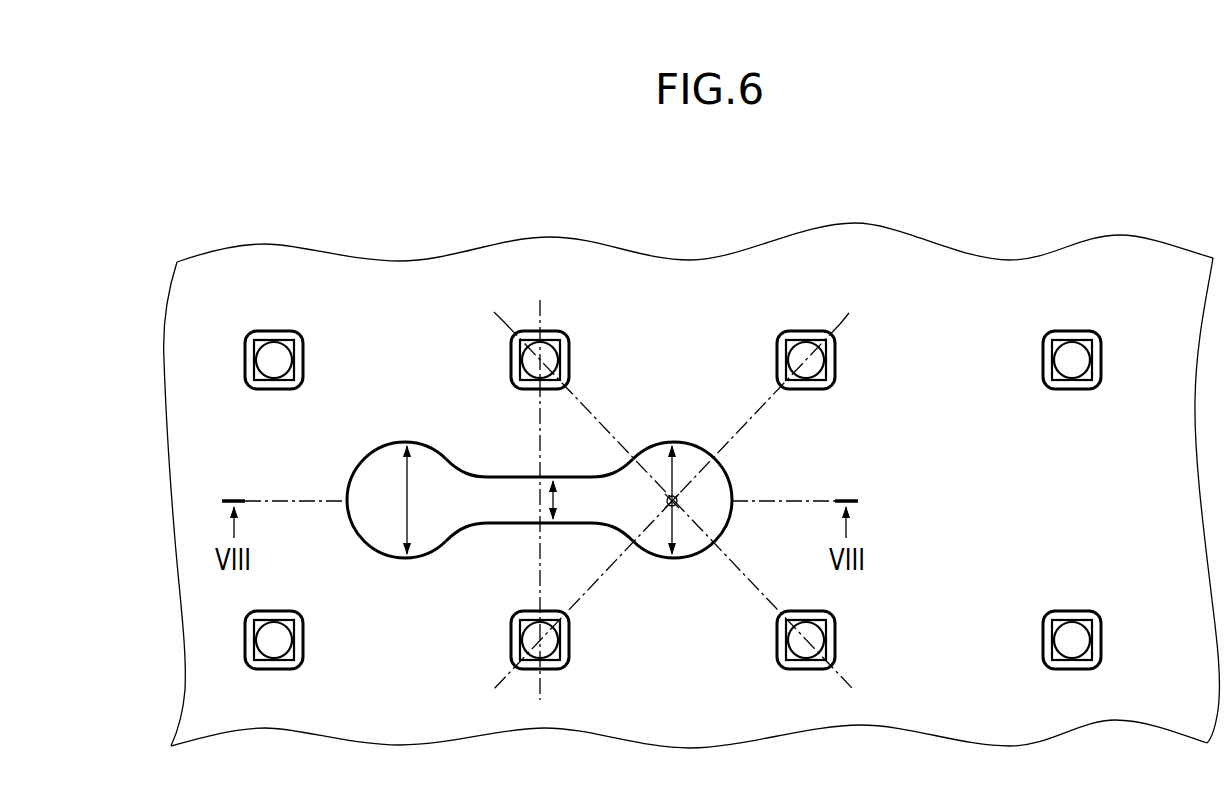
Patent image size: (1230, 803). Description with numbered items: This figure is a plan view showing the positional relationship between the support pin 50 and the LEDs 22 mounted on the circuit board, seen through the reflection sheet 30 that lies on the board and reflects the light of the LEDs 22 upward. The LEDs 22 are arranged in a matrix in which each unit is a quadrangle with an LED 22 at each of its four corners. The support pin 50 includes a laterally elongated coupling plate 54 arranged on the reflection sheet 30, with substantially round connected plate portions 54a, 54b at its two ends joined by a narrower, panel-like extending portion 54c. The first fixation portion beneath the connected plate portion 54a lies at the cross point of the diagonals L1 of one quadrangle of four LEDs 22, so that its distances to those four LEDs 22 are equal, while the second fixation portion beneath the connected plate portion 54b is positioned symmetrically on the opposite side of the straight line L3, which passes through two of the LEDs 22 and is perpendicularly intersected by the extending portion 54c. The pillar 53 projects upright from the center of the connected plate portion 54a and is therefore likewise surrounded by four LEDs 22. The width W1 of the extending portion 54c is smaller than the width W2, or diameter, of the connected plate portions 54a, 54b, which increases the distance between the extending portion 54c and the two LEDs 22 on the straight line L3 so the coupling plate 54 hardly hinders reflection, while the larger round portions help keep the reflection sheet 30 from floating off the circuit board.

The LED 22 is at (270, 352).
The reflection sheet 30 is at (1002, 452).
The support pin 50 is at (577, 492).
The pillar 53 is at (655, 499).
The coupling plate 54 is at (577, 528).
The connected plate portion 54a is at (731, 524).
The connected plate portion 54b is at (411, 560).
The extending portion 54c is at (507, 475).
The diagonals L1 is at (672, 303).
The straight line L3 is at (538, 282).
The width of the extending portion W1 is at (577, 500).
The width of the connected plate portion W2 is at (566, 500).